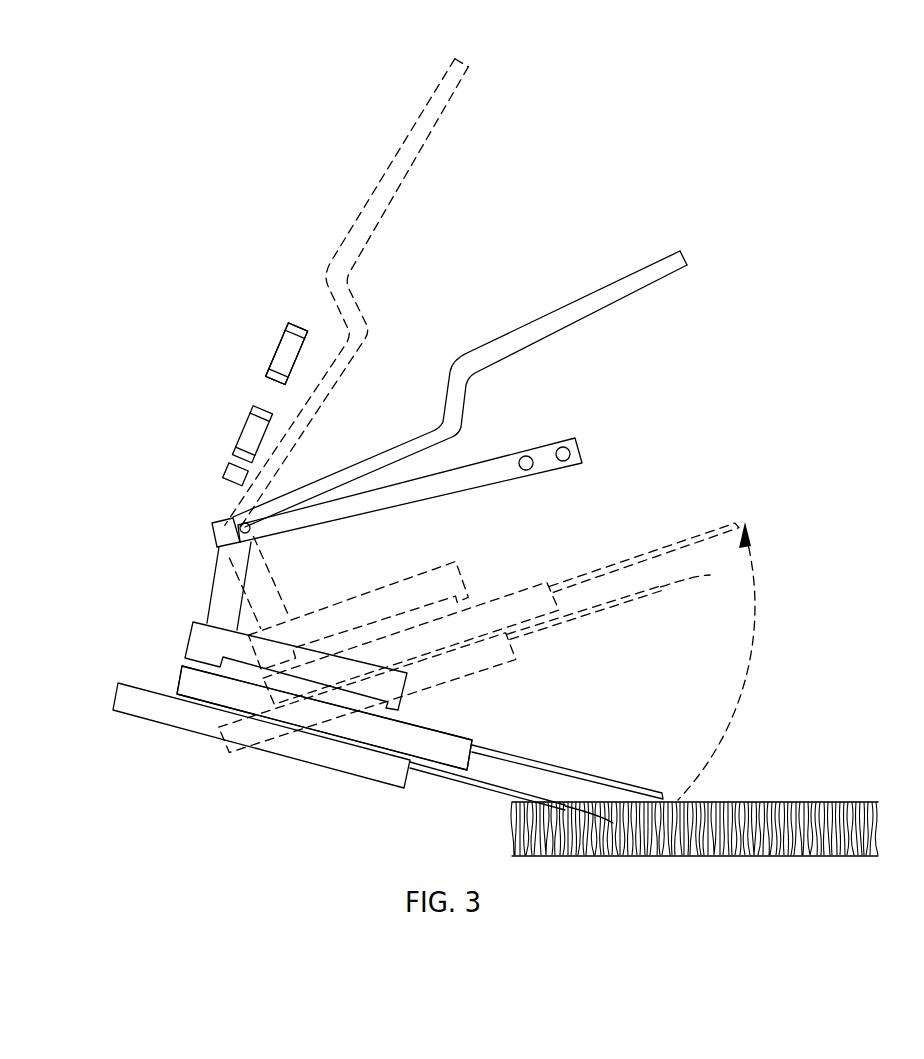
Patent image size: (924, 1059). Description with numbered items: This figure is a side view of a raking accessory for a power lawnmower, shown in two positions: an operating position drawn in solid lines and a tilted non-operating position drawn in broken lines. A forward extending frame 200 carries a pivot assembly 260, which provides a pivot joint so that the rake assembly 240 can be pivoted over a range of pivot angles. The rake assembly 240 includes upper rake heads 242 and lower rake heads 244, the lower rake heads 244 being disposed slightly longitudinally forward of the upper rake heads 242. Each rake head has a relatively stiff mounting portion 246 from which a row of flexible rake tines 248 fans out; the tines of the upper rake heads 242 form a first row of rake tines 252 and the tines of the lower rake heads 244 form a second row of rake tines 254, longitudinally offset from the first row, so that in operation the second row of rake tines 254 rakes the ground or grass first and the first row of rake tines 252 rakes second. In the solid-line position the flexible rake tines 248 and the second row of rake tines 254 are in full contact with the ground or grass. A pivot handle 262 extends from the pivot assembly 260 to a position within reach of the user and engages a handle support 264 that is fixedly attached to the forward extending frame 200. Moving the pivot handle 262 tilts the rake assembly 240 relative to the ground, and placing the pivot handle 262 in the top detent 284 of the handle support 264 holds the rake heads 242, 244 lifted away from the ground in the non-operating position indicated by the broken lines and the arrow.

The forward extending frame 200 is at (583, 450).
The rake assembly 240 is at (142, 510).
The upper rake head 242 is at (450, 726).
The lower rake head 244 is at (267, 753).
The mounting portion 246 is at (377, 733).
The flexible rake tines 248 is at (563, 768).
The first row of rake tines 252 is at (700, 797).
The second row of rake tines 254 is at (518, 793).
The pivot assembly 260 is at (233, 518).
The pivot handle 262 is at (622, 288).
The handle support 264 is at (307, 325).
The top detent 284 is at (290, 352).